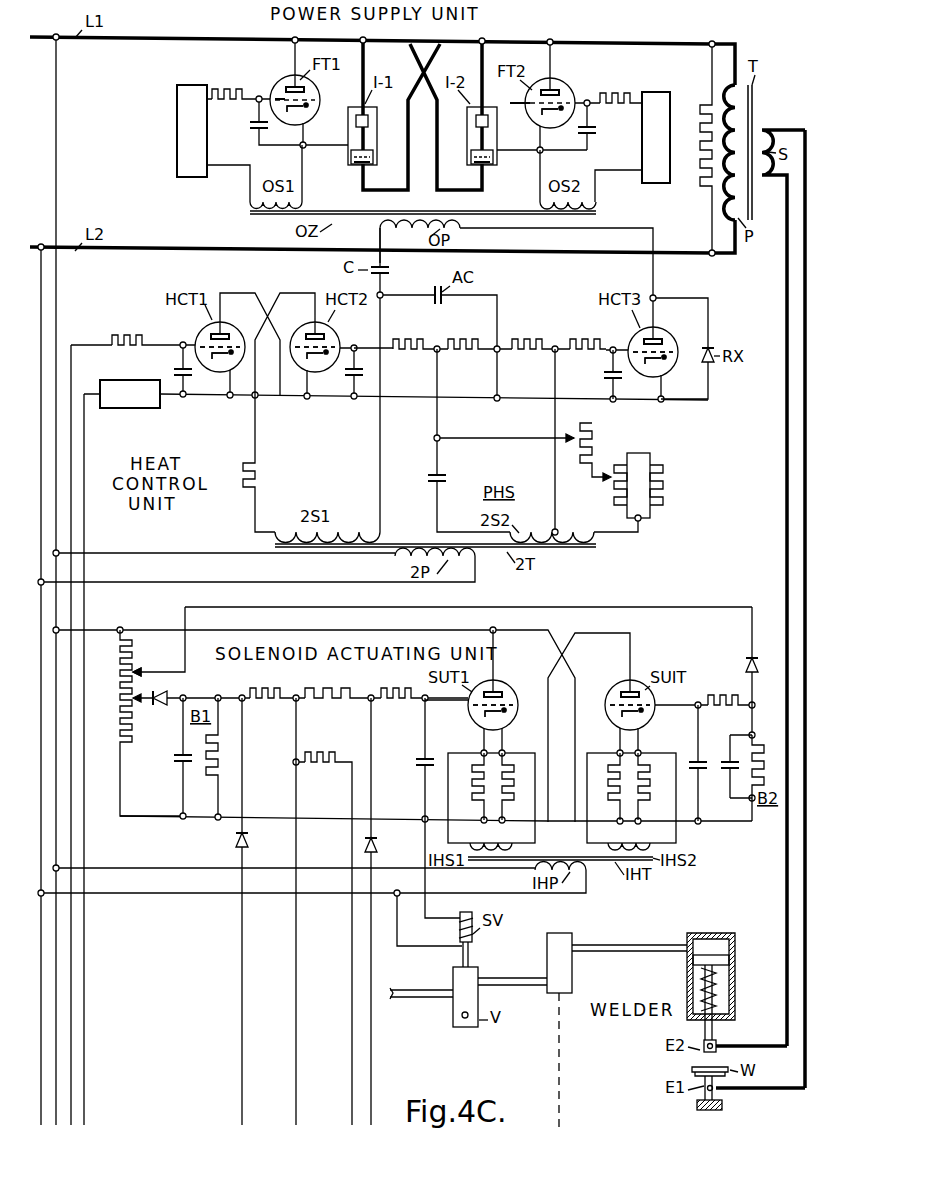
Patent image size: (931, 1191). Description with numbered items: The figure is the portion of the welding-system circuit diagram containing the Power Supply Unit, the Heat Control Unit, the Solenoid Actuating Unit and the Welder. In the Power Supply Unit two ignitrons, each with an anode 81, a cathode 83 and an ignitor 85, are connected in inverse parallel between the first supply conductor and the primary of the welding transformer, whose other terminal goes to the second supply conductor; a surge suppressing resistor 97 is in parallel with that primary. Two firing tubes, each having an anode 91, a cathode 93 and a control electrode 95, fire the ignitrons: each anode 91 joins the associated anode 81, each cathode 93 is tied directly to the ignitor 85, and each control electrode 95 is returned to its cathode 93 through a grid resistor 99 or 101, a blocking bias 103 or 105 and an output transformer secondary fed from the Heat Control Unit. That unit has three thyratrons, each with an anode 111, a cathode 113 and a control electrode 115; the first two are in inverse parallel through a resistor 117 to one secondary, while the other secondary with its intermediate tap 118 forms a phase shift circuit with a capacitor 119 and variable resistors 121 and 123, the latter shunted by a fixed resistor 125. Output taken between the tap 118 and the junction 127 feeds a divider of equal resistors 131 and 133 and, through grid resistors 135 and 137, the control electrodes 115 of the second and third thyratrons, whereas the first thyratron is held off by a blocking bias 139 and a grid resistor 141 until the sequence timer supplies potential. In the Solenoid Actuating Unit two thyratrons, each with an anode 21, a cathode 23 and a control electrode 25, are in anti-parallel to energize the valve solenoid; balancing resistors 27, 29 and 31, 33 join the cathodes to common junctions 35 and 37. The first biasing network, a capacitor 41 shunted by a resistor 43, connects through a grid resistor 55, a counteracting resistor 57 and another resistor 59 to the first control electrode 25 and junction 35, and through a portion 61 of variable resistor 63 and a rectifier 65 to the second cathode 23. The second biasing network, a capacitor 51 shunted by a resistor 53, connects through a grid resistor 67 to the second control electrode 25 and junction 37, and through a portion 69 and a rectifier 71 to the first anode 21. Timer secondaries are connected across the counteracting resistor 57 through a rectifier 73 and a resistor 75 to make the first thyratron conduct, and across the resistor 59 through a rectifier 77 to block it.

The anode 21 is at (500, 688).
The cathode 23 is at (510, 717).
The control electrode 25 is at (513, 702).
The balancing resistor 27 is at (472, 790).
The balancing resistor 29 is at (514, 790).
The balancing resistor 31 is at (608, 790).
The balancing resistor 33 is at (650, 790).
The common junction 35 is at (491, 837).
The common junction 37 is at (629, 838).
The capacitor 41 is at (173, 760).
The resistor 43 is at (206, 778).
The capacitor 51 is at (727, 773).
The resistor 53 is at (766, 759).
The grid resistor 55 is at (384, 702).
The counteracting resistor 57 is at (331, 702).
The resistor 59 is at (254, 702).
The portion of variable resistor 61 is at (120, 684).
The variable resistor 63 is at (105, 688).
The rectifier 65 is at (160, 705).
The grid resistor 67 is at (728, 686).
The portion of variable resistor 69 is at (133, 663).
The rectifier 71 is at (748, 658).
The rectifier 73 is at (378, 847).
The resistor 75 is at (312, 767).
The rectifier 77 is at (235, 843).
The anode 81 is at (369, 121).
The cathode 83 is at (354, 168).
The ignitor 85 is at (371, 154).
The anode 91 is at (290, 86).
The cathode 93 is at (307, 118).
The control electrode 95 is at (278, 95).
The surge suppressing resistor 97 is at (706, 106).
The grid resistor 99 is at (225, 89).
The grid resistor 101 is at (620, 92).
The blocking bias 103 is at (177, 126).
The blocking bias 105 is at (642, 150).
The anode 111 is at (226, 332).
The cathode 113 is at (228, 362).
The control electrode 115 is at (200, 345).
The resistor 117 is at (256, 478).
The intermediate tap 118 is at (558, 534).
The capacitor 119 is at (448, 474).
The variable resistor 121 is at (594, 445).
The variable resistor 123 is at (612, 490).
The fixed resistor 125 is at (663, 490).
The junction 127 is at (440, 441).
The resistor 131 is at (451, 340).
The resistor 133 is at (512, 340).
The grid resistor 135 is at (396, 340).
The grid resistor 137 is at (580, 334).
The blocking bias 139 is at (118, 408).
The grid resistor 141 is at (128, 336).